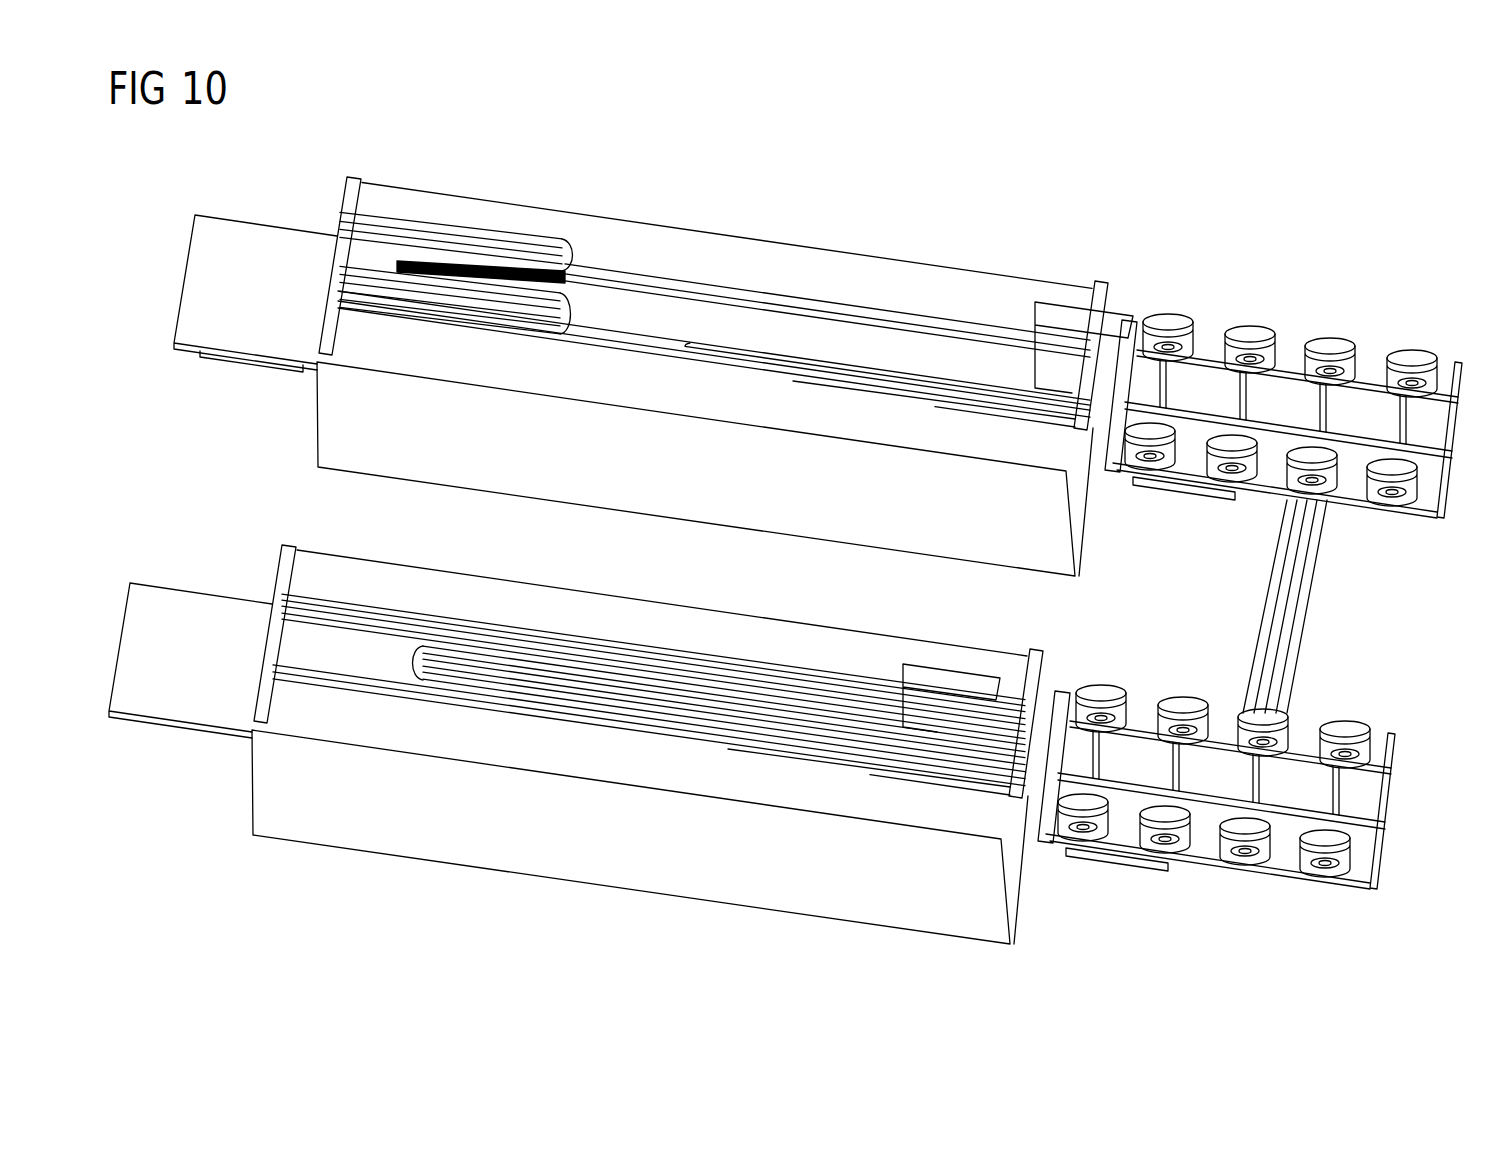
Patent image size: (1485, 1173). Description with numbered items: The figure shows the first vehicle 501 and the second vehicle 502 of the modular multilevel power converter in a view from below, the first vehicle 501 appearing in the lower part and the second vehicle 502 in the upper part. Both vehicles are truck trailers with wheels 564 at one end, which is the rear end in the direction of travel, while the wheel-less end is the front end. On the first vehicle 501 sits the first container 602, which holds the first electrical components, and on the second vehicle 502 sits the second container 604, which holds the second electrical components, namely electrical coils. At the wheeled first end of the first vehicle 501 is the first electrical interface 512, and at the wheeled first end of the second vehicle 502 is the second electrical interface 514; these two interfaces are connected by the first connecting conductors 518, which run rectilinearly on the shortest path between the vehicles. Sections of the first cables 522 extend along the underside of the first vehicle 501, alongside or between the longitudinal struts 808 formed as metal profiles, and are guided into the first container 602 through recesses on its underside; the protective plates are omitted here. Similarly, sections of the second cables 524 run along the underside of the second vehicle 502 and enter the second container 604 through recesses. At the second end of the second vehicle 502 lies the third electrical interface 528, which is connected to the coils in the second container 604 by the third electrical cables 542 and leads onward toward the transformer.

The first vehicle 501 is at (505, 891).
The second vehicle 502 is at (871, 162).
The first electrical interface 512 is at (1117, 892).
The second electrical interface 514 is at (1182, 492).
The first connecting conductors 518 is at (1318, 605).
The first cables 522 is at (902, 705).
The second electrical cables 524 is at (873, 363).
The third electrical interface 528 is at (243, 372).
The third electrical cables 542 is at (398, 278).
The wheels 564 is at (1238, 875).
The first container 602 is at (630, 613).
The second container 604 is at (773, 262).
The longitudinal struts 808 is at (583, 328).